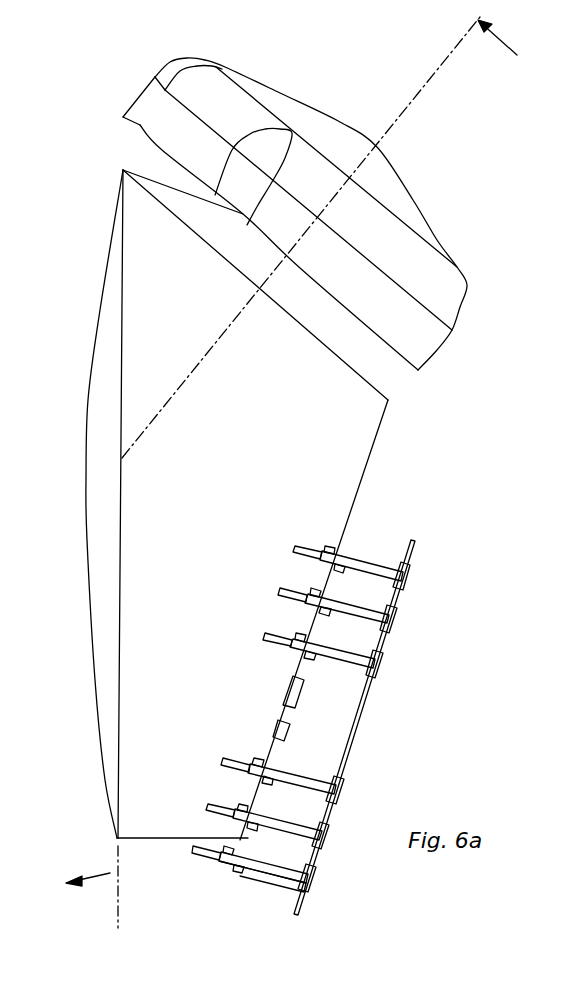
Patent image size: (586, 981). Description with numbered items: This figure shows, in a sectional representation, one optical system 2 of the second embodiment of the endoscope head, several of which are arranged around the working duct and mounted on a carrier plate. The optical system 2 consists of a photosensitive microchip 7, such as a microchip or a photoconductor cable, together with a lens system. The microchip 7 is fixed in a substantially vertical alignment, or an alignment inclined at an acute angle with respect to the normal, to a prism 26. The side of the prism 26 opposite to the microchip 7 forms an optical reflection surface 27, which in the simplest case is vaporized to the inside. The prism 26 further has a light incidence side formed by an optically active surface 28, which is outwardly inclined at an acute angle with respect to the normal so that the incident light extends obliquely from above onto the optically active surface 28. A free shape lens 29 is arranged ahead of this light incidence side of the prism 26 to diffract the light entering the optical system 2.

The optical system 2 is at (500, 380).
The photosensitive microchip 7 is at (390, 636).
The prism 26 is at (345, 483).
The optical reflection surface 27 is at (105, 476).
The optically active surface 28 is at (345, 351).
The free shape lens 29 is at (434, 285).